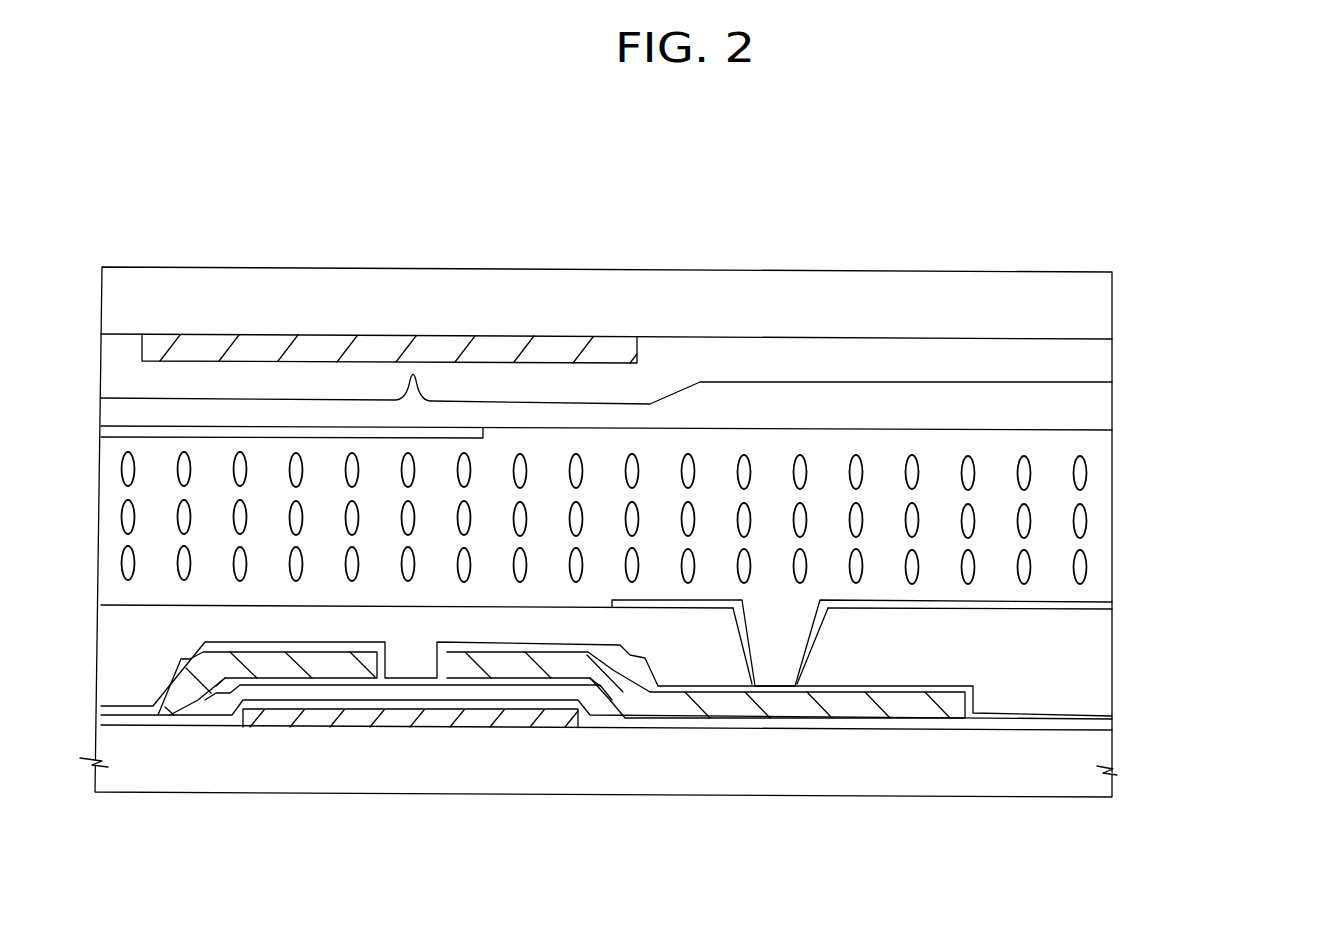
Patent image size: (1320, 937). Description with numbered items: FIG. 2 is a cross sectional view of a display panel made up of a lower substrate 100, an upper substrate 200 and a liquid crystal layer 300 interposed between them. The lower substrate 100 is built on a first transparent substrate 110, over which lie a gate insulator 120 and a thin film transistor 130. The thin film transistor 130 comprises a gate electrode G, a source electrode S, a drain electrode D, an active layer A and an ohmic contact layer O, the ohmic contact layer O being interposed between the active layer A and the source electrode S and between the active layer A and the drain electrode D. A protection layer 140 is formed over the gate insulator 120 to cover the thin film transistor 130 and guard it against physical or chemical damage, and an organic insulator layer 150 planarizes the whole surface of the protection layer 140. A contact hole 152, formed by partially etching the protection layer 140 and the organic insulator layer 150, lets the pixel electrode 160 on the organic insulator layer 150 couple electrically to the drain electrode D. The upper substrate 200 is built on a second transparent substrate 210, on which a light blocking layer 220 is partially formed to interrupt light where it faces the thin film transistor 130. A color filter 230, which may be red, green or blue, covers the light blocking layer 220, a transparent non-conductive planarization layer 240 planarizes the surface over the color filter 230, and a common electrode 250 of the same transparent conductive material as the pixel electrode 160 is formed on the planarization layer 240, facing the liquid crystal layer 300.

The lower substrate 100 is at (1222, 700).
The first transparent substrate 110 is at (1108, 768).
The gate insulator 120 is at (1108, 729).
The thin film transistor 130 is at (678, 866).
The protection layer 140 is at (1106, 714).
The organic insulator layer 150 is at (1106, 666).
The contact hole 152 is at (792, 659).
The pixel electrode 160 is at (1106, 605).
The upper substrate 200 is at (1222, 360).
The second transparent substrate 210 is at (1106, 313).
The light blocking layer 220 is at (143, 348).
The color filter 230 is at (1106, 359).
The planarization layer 240 is at (1106, 408).
The common electrode 250 is at (108, 431).
The liquid crystal layer 300 is at (1102, 522).
The source electrode S is at (270, 670).
The gate electrode G is at (358, 719).
The active layer A is at (450, 700).
The ohmic contact layer O is at (540, 690).
The drain electrode D is at (677, 707).